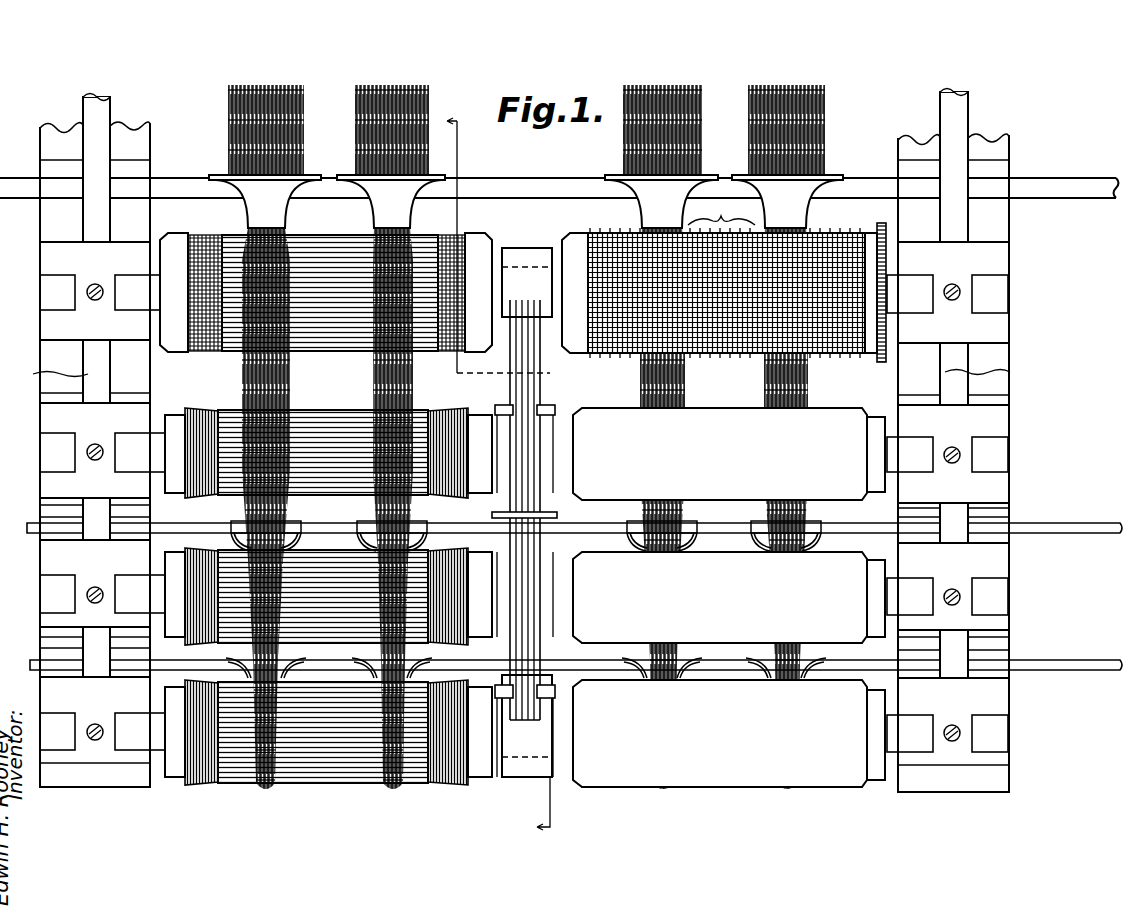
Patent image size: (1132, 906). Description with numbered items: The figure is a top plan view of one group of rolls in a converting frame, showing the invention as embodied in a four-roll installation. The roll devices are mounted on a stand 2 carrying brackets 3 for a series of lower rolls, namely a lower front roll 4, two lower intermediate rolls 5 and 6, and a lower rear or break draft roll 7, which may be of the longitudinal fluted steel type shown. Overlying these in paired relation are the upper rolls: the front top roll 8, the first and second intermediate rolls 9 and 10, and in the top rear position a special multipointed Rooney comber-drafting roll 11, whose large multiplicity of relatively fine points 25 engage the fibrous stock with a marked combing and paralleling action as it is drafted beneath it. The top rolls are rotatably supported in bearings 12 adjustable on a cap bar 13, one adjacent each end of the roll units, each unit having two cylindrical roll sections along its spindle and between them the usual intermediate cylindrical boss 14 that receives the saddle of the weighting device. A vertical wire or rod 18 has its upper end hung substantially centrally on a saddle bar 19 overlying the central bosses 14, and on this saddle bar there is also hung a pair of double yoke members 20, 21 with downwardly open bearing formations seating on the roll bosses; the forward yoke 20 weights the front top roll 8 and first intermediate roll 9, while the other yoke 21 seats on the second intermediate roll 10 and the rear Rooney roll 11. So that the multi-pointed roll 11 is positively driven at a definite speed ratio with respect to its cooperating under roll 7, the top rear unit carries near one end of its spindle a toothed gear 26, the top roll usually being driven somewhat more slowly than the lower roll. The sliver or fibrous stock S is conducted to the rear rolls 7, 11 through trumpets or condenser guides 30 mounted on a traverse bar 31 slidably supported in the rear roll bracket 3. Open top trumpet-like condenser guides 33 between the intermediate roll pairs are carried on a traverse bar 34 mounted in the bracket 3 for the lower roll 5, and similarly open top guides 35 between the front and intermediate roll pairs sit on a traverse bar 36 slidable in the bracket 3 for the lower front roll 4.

The stand 2 is at (144, 148).
The bracket 3 is at (57, 168).
The lower front roll 4 is at (338, 781).
The lower intermediate roll 5 is at (331, 540).
The lower intermediate roll 6 is at (328, 412).
The lower rear or break draft roll 7 is at (346, 346).
The front top roll 8 is at (206, 781).
The first intermediate roll 9 is at (197, 545).
The second intermediate roll 10 is at (201, 415).
The multipointed Rooney comber-drafting roll 11 is at (211, 251).
The bearing 12 is at (45, 260).
The cap bar 13 is at (532, 371).
The intermediate cylindrical boss 14 is at (500, 282).
The vertical wire or rod 18 is at (558, 516).
The saddle bar 19 is at (508, 393).
The double yoke member 20 is at (548, 645).
The double yoke member 21 is at (545, 368).
The points 25 is at (221, 236).
The toothed gear 26 is at (878, 361).
The trumpet or condenser guide 30 is at (282, 217).
The traverse bar 31 is at (171, 184).
The open top condenser guide 33 is at (242, 530).
The traverse bar 34 is at (1061, 531).
The open top guide 35 is at (228, 655).
The traverse bar 36 is at (1055, 670).
The sliver or fibrous stock S is at (288, 380).